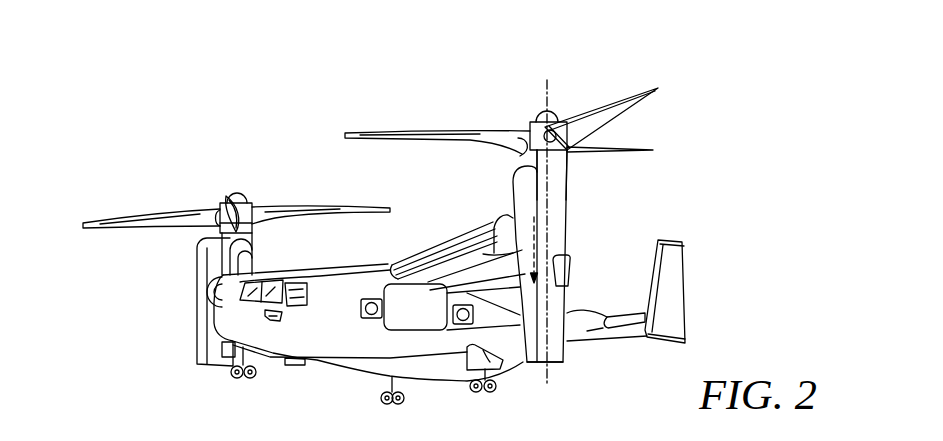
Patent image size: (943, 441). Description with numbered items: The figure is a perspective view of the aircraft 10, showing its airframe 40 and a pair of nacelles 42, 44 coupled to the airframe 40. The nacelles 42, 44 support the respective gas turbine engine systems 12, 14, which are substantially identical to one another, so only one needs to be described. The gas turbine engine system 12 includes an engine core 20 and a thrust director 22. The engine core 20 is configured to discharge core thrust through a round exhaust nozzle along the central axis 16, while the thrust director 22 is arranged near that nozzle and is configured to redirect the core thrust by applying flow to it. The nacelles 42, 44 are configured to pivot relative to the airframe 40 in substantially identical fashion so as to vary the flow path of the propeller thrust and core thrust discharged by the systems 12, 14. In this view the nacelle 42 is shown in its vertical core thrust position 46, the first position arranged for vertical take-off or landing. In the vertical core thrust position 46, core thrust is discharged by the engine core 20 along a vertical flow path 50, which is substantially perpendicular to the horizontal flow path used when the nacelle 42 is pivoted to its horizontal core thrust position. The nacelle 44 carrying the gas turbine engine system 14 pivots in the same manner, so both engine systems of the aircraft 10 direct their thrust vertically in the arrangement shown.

The aircraft 10 is at (520, 96).
The gas turbine engine system 12 is at (492, 114).
The gas turbine engine system 14 is at (272, 190).
The central axis 16 is at (560, 112).
The engine core 20 is at (565, 215).
The thrust director 22 is at (567, 356).
The airframe 40 is at (358, 284).
The nacelle 42 is at (518, 193).
The nacelle 44 is at (250, 255).
The vertical core thrust position 46 is at (582, 185).
The vertical flow path 50 is at (560, 242).